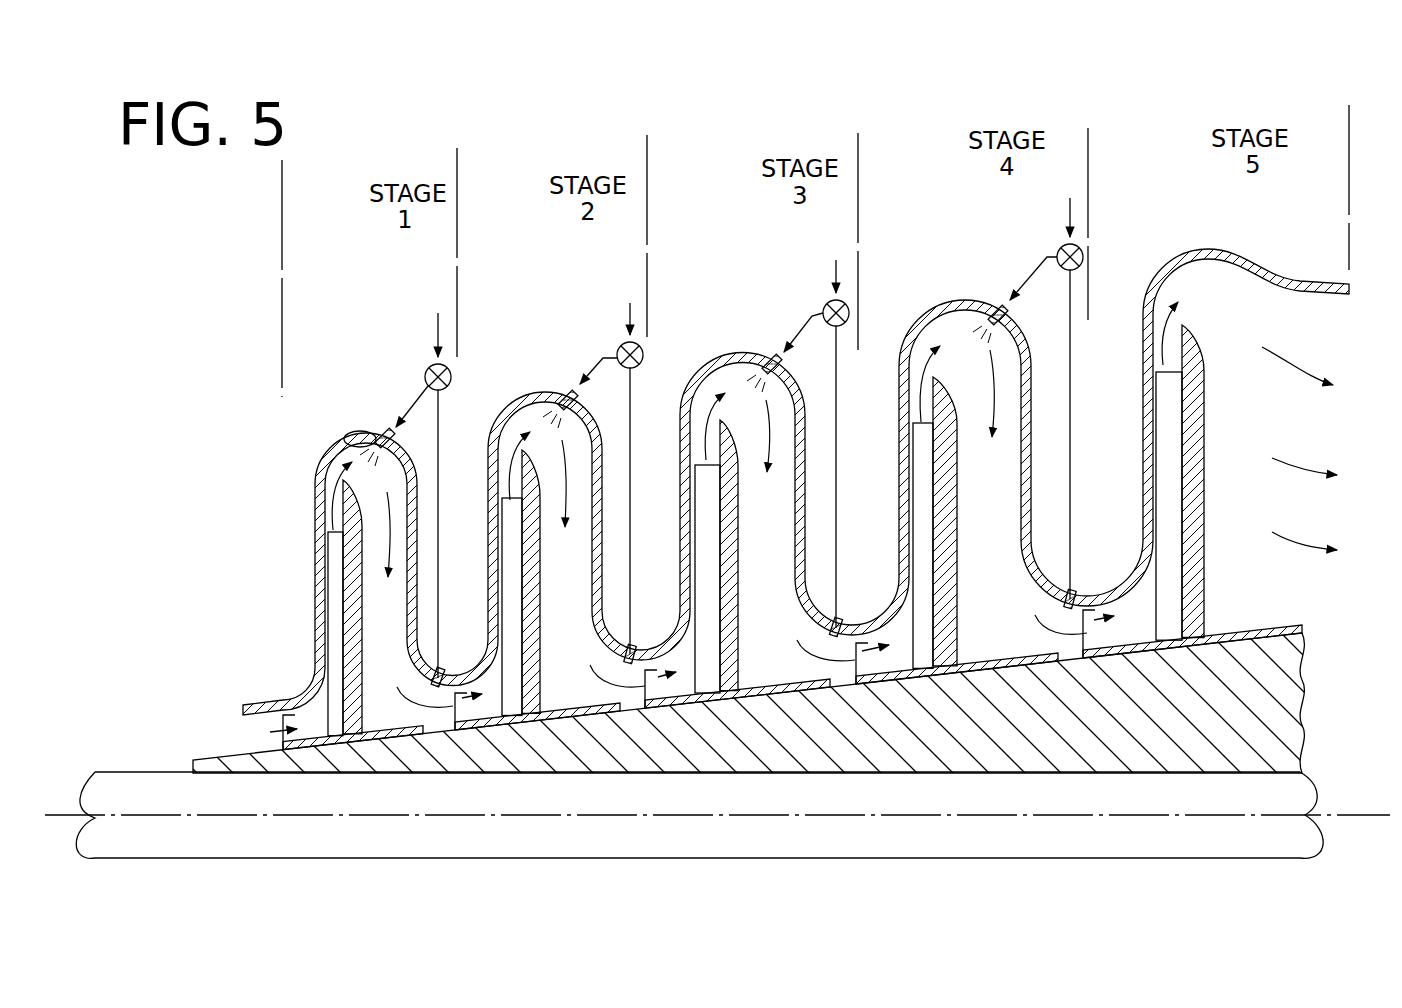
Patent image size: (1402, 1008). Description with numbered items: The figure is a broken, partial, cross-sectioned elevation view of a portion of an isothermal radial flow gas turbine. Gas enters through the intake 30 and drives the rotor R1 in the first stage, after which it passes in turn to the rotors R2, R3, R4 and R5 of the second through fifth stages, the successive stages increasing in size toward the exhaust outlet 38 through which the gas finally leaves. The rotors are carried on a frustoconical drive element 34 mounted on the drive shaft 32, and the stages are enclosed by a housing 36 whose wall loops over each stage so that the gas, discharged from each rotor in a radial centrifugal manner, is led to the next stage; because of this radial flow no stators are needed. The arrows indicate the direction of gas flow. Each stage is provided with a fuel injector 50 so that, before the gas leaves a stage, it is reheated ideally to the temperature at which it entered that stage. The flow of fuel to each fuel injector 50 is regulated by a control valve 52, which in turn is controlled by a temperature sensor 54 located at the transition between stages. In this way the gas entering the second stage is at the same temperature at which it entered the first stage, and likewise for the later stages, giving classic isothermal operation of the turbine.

The intake 30 is at (232, 750).
The drive shaft 32 is at (950, 808).
The frustoconical drive element 34 is at (960, 728).
The housing 36 is at (358, 432).
The exhaust outlet 38 is at (1268, 433).
The fuel injector 50 is at (346, 440).
The control valve 52 is at (428, 376).
The temperature sensor 54 is at (428, 683).
The rotor R1 is at (353, 727).
The rotor R2 is at (537, 703).
The rotor R3 is at (737, 681).
The rotor R4 is at (957, 658).
The rotor R5 is at (1192, 628).